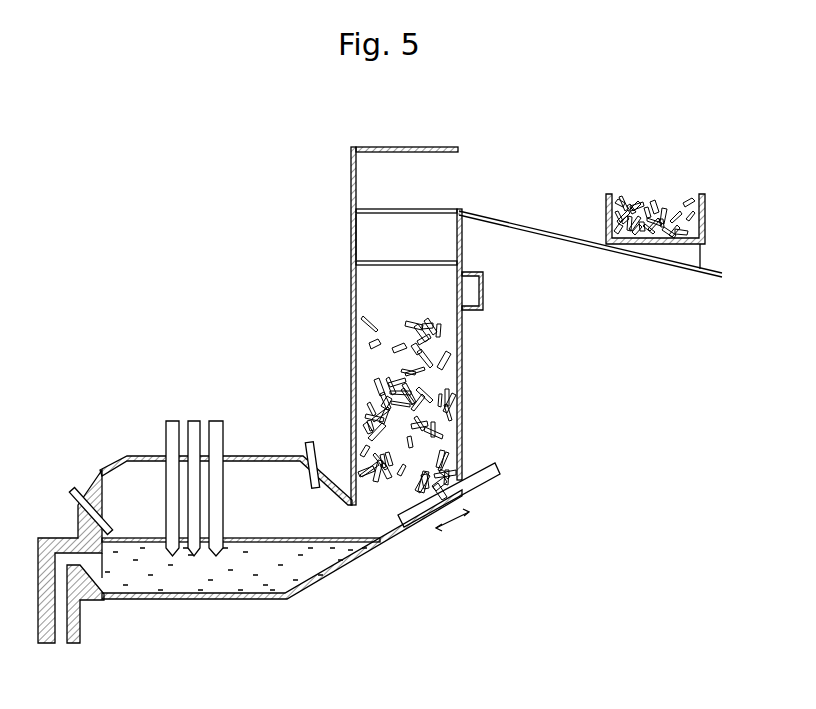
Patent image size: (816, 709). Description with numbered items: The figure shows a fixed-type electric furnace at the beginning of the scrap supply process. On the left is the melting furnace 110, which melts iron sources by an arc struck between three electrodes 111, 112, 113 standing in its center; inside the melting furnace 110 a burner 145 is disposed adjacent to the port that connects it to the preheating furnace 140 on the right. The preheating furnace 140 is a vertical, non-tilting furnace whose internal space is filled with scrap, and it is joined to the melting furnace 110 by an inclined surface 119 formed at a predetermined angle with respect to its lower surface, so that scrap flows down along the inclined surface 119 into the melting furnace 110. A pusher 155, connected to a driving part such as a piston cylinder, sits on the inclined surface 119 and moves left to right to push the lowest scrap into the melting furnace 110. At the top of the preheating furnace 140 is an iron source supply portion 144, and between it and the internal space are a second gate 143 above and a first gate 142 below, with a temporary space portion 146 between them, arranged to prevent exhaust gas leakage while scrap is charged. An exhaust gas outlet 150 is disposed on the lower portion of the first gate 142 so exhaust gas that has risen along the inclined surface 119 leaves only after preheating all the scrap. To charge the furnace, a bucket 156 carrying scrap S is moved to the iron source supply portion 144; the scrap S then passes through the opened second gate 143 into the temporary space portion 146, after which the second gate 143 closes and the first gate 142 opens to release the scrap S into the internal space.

The melting furnace 110 is at (87, 467).
The electrode 111 is at (216, 430).
The electrode 112 is at (172, 421).
The electrode 113 is at (194, 421).
The inclined surface 119 is at (331, 575).
The preheating furnace 140 is at (463, 376).
The first gate 142 is at (368, 262).
The second gate 143 is at (390, 212).
The iron source supply portion 144 is at (456, 170).
The burner 145 is at (310, 445).
The temporary space portion 146 is at (395, 233).
The exhaust gas outlet 150 is at (480, 283).
The pusher 155 is at (483, 480).
The bucket 156 is at (607, 200).
The scrap S is at (626, 196).